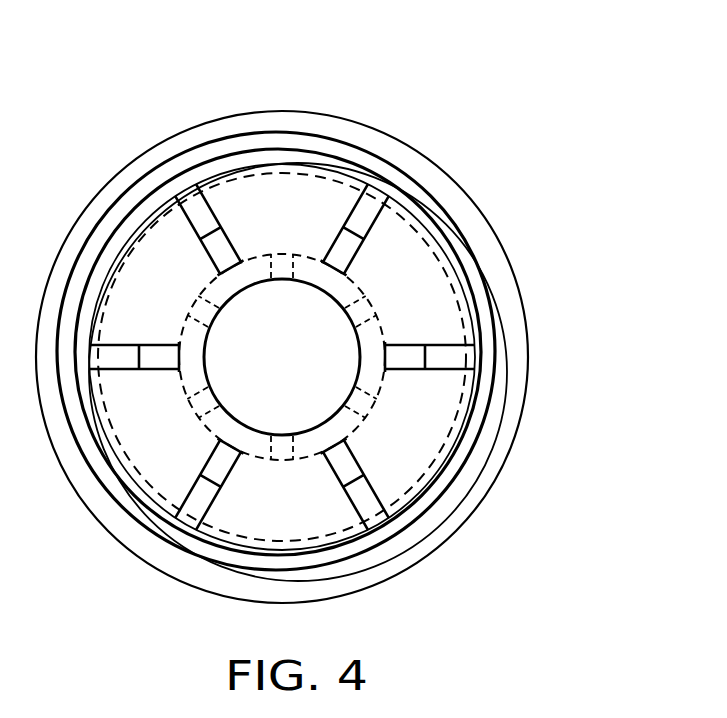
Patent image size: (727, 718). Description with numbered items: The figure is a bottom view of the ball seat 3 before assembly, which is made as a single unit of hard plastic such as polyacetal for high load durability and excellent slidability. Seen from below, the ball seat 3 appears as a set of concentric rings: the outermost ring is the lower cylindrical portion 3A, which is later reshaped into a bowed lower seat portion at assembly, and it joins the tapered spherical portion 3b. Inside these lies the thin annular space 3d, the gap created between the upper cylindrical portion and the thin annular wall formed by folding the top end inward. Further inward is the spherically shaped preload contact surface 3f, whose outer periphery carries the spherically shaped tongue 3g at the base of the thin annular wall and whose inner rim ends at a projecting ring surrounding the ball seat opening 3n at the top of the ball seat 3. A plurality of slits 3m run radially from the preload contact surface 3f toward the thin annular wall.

The ball seat 3 is at (528, 317).
The lower cylindrical portion 3A is at (313, 123).
The tapered spherical portion 3b is at (360, 153).
The thin annular space 3d is at (385, 182).
The preload contact surface 3f is at (407, 258).
The spherically shaped tongue 3g is at (458, 278).
The slits 3m is at (453, 360).
The ball seat opening 3n is at (322, 360).